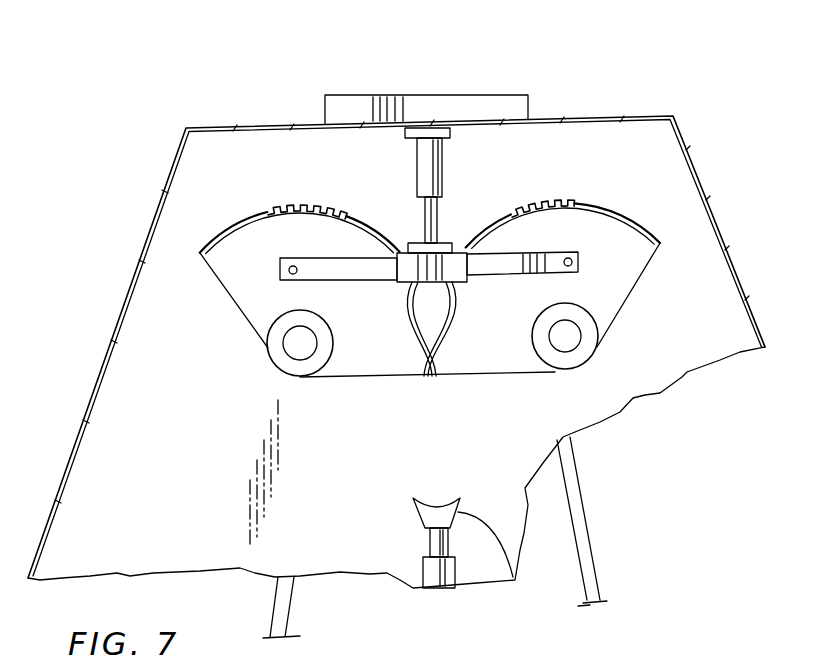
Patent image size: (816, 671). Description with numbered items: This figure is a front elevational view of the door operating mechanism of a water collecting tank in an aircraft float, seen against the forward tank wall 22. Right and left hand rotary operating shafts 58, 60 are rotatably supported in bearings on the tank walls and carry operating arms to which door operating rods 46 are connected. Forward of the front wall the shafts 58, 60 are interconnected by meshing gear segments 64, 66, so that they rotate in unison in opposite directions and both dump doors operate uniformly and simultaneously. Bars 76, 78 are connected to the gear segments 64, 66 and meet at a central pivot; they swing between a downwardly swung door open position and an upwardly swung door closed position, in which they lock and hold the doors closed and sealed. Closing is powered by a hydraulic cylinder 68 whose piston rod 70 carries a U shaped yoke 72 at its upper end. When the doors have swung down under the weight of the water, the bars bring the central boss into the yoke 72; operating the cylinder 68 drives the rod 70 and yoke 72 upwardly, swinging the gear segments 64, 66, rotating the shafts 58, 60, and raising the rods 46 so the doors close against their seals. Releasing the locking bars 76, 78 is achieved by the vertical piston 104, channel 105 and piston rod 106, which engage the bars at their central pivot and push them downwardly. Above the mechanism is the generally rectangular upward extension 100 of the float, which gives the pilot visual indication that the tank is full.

The forward tank wall 22 is at (196, 528).
The door operating rod 46 is at (300, 593).
The right hand rotary operating shaft 58 is at (565, 337).
The left hand rotary operating shaft 60 is at (297, 343).
The gear segment 64 is at (552, 200).
The gear segment 66 is at (297, 208).
The hydraulic cylinder 68 is at (453, 567).
The piston rod 70 is at (428, 540).
The U shaped yoke 72 is at (513, 577).
The bar 76 is at (517, 262).
The bar 78 is at (343, 272).
The upward extension 100 is at (448, 95).
The vertical piston 104 is at (447, 162).
The channel 105 is at (407, 285).
The piston rod 106 is at (425, 228).